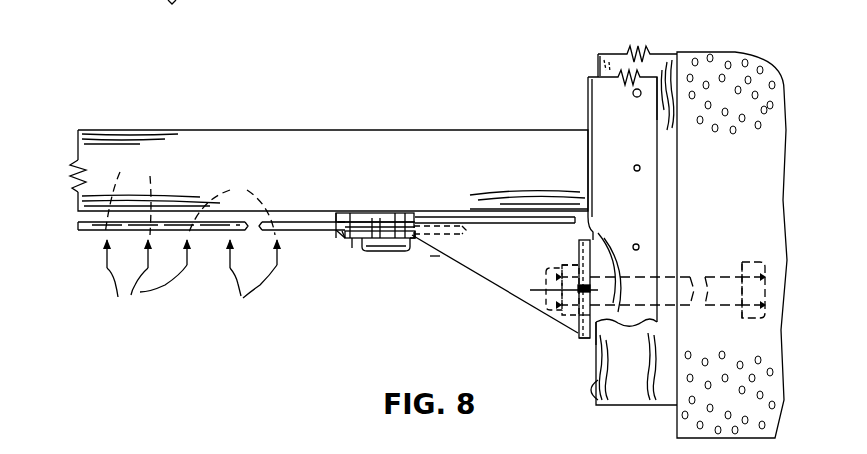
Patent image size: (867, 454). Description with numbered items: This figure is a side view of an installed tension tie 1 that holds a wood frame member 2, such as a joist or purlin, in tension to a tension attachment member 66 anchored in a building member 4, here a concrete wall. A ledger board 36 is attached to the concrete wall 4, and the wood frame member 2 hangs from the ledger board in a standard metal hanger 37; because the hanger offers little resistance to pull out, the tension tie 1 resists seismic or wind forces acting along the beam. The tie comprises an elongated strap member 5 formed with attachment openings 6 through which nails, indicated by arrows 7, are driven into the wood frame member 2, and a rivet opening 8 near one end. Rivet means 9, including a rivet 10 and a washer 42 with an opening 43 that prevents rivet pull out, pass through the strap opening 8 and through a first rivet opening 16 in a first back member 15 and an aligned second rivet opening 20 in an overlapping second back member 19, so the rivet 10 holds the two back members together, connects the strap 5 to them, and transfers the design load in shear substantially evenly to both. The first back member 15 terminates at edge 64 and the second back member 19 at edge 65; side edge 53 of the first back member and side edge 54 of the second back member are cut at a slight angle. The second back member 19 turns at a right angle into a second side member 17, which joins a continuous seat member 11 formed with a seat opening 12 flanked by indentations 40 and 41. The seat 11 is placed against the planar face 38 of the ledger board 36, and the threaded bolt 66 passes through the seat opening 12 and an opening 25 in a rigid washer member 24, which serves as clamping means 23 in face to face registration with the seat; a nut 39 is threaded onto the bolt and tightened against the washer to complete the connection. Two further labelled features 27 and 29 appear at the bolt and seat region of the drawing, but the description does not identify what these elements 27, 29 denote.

The tension tie 1 is at (434, 257).
The wood frame member 2 is at (140, 127).
The building member 4 is at (710, 47).
The elongated strap member 5 is at (322, 233).
The attachment openings 6 is at (153, 193).
The attachment members 7 is at (192, 281).
The rivet opening 8 is at (396, 230).
The rivet means 9 is at (372, 252).
The rivet 10 is at (383, 250).
The seat member 11 is at (596, 271).
The seat opening 12 is at (594, 270).
The first back member 15 is at (341, 242).
The first rivet opening 16 is at (378, 232).
The second side member 17 is at (530, 300).
The second back member 19 is at (341, 210).
The second rivet opening 20 is at (390, 226).
The clamping means 23 is at (577, 334).
The washer member 24 is at (573, 320).
The washer opening 25 is at (562, 210).
The bolt head 27 is at (560, 292).
The bolt 29 is at (592, 288).
The ledger board 36 is at (591, 363).
The standard metal hanger 37 is at (624, 215).
The planar face 38 is at (606, 386).
The nut 39 is at (560, 263).
The indentation 40 is at (598, 332).
The indentation 41 is at (600, 232).
The washer 42 is at (413, 248).
The washer opening 43 is at (348, 224).
The side edge 53 is at (352, 250).
The side edge 54 is at (338, 215).
The edge 64 is at (336, 238).
The edge 65 is at (340, 218).
The tension attachment member 66 is at (749, 262).